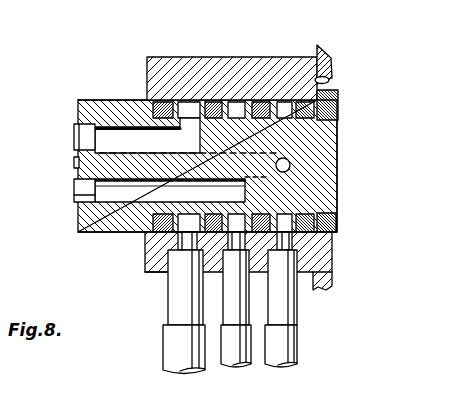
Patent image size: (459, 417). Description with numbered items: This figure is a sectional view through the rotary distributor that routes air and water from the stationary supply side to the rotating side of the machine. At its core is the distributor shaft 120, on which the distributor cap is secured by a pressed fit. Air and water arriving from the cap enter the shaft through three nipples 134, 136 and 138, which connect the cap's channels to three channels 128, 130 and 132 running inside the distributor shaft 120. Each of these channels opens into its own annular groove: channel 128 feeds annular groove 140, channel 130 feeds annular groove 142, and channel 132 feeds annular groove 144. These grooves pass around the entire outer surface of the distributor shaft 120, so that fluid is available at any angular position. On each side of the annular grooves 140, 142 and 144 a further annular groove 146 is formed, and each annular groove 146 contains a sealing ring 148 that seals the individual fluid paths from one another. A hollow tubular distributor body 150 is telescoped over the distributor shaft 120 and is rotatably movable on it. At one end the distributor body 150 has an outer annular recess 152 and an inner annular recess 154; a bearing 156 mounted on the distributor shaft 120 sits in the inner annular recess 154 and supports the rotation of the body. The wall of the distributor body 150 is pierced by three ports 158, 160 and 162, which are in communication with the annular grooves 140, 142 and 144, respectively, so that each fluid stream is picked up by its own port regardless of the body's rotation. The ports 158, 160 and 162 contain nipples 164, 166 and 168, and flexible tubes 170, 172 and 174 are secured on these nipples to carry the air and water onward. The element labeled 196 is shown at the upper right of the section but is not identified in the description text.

The distributor shaft 120 is at (94, 96).
The channel 128 is at (113, 134).
The channel 130 is at (122, 193).
The channel 132 is at (130, 152).
The nipple 134 is at (75, 137).
The nipple 136 is at (77, 192).
The nipple 138 is at (75, 166).
The annular groove 140 is at (190, 100).
The annular groove 142 is at (237, 100).
The annular groove 144 is at (282, 100).
The annular groove 146 is at (161, 100).
The sealing ring 148 is at (305, 277).
The distributor body 150 is at (162, 277).
The outer annular recess 152 is at (330, 80).
The inner annular recess 154 is at (338, 98).
The bearing 156 is at (335, 226).
The port 158 is at (193, 256).
The port 160 is at (251, 308).
The port 162 is at (288, 283).
The nipple 164 is at (168, 312).
The nipple 166 is at (229, 310).
The nipple 168 is at (289, 318).
The flexible tube 170 is at (166, 362).
The flexible tube 172 is at (243, 366).
The flexible tube 174 is at (292, 365).
The chamfered lip 196 is at (332, 52).